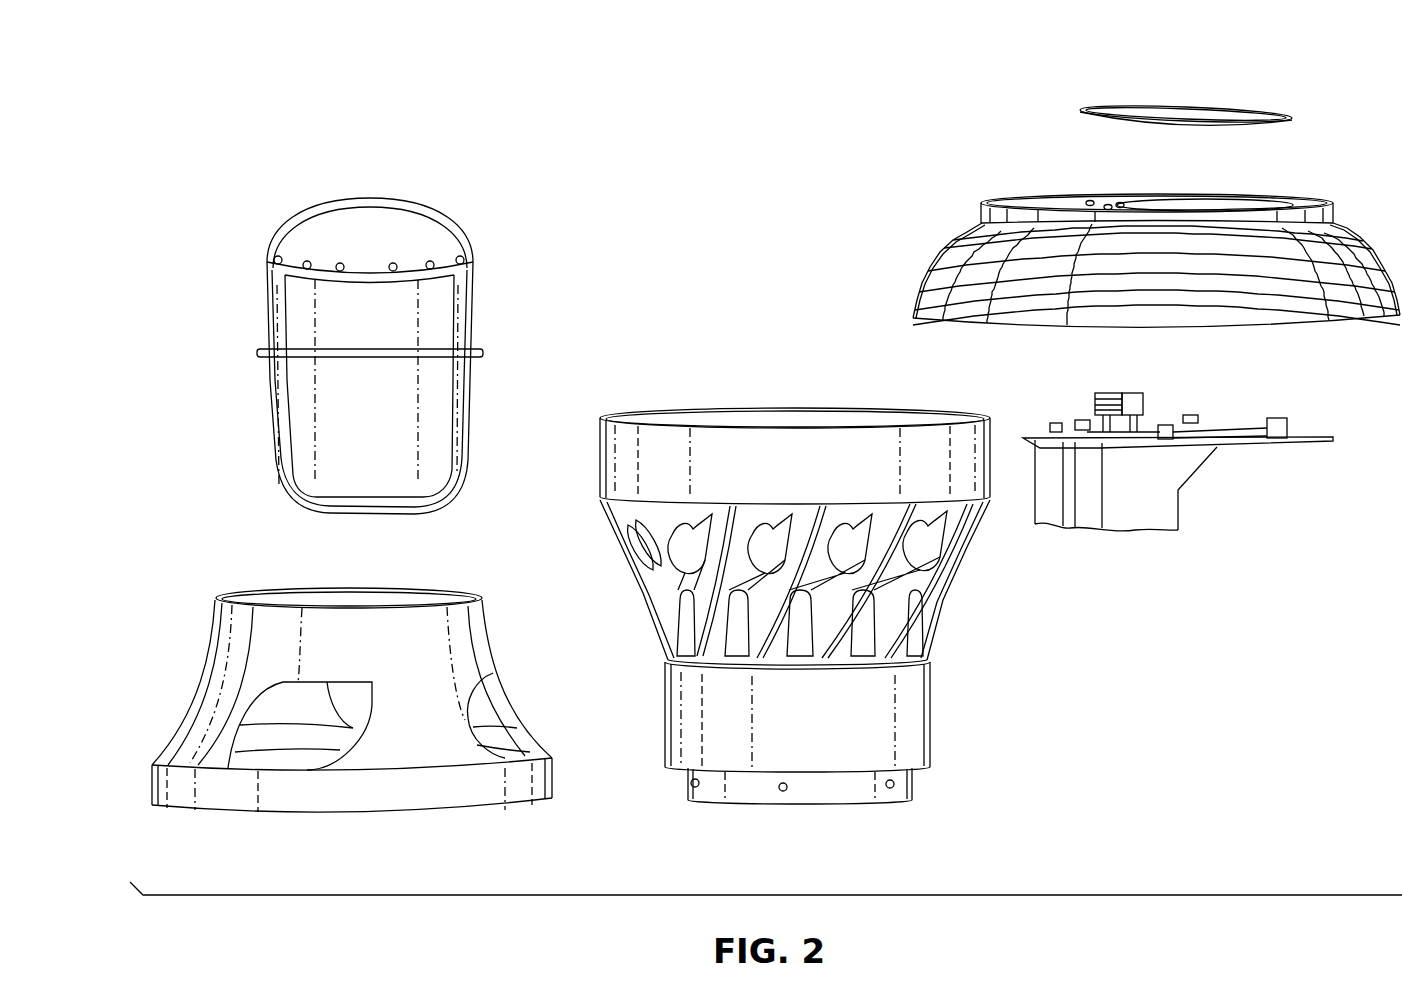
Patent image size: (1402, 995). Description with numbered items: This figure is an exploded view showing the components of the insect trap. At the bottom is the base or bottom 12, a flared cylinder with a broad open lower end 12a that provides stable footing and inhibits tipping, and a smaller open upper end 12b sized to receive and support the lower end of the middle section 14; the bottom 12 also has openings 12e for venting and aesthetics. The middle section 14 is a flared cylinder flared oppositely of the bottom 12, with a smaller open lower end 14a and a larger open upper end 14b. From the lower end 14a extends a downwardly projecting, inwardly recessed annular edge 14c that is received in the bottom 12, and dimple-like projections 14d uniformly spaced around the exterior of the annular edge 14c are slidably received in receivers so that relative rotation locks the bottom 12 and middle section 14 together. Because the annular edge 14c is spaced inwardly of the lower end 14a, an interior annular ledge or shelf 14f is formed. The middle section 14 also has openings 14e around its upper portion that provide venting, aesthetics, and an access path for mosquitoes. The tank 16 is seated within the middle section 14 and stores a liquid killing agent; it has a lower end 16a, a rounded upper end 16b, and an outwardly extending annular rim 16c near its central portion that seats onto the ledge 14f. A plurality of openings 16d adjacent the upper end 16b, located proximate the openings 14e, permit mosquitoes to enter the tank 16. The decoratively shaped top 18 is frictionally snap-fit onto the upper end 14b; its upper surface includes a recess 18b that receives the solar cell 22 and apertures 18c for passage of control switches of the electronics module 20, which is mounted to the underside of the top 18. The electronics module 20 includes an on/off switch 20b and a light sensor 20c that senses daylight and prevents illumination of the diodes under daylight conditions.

The bottom 12 is at (340, 696).
The lower end 12a is at (453, 813).
The upper end 12b is at (452, 592).
The openings 12e is at (375, 700).
The middle section 14 is at (814, 606).
The lower end 14a is at (930, 728).
The upper end 14b is at (733, 406).
The annular edge 14c is at (890, 803).
The projections 14d is at (696, 790).
The openings 14e is at (877, 630).
The annular ledge 14f is at (930, 768).
The tank 16 is at (361, 348).
The lower end 16a is at (283, 492).
The upper end 16b is at (422, 210).
The annular rim 16c is at (257, 352).
The openings 16d is at (340, 264).
The top 18 is at (1139, 236).
The recess 18b is at (1210, 203).
The apertures 18c is at (1110, 205).
The electronics module 20 is at (1178, 451).
The on/off switch 20b is at (1105, 394).
The light sensor 20c is at (1138, 394).
The solar cell 22 is at (1292, 103).